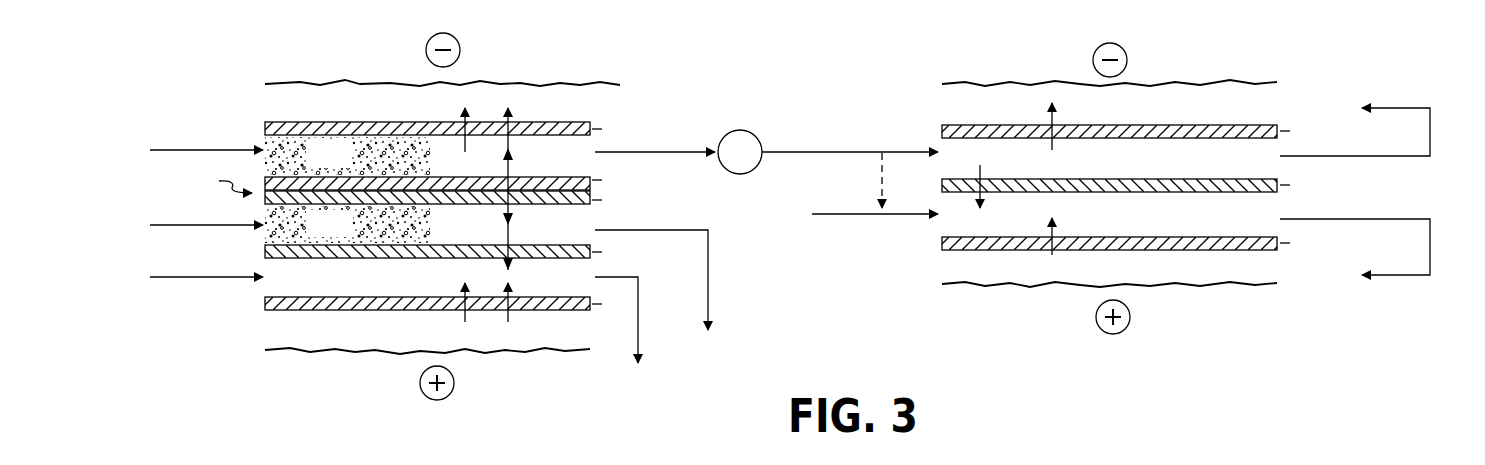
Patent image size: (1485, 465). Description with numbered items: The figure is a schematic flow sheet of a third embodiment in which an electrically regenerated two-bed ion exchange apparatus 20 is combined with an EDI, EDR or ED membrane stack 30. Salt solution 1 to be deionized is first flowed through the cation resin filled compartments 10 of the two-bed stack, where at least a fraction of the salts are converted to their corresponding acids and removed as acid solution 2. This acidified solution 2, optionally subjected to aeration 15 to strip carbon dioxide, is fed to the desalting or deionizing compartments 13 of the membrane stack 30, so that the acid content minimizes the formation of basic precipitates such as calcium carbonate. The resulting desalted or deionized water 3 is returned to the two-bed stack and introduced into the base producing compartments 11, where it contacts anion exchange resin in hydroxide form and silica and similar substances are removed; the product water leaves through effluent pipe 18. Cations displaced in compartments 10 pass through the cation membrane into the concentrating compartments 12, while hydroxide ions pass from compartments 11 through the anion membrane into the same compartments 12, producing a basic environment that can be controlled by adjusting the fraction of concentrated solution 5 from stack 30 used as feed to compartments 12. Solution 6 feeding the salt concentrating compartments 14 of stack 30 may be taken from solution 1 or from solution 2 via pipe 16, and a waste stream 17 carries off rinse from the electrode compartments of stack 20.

The salt solution 1 is at (243, 148).
The acid solution 2 is at (668, 152).
The desalted or deionized water 3 is at (172, 224).
The concentrated solution 5 is at (216, 283).
The solution fed to salt concentrating compartments 6 is at (842, 216).
The cation resin filled compartments 10 is at (628, 240).
The base producing compartments 11 is at (640, 271).
The concentrating compartments 12 is at (579, 227).
The desalting or deionizing compartments 13 is at (1106, 209).
The salt concentrating compartments 14 is at (1143, 186).
The aeration 15 is at (738, 128).
The pipe 16 is at (884, 183).
The waste line 17 is at (640, 310).
The effluent pipe 18 is at (712, 273).
The electrically regenerated two-bed ion exchange apparatus 20 is at (266, 58).
The EDI, EDR or ED membrane stack 30 is at (956, 66).